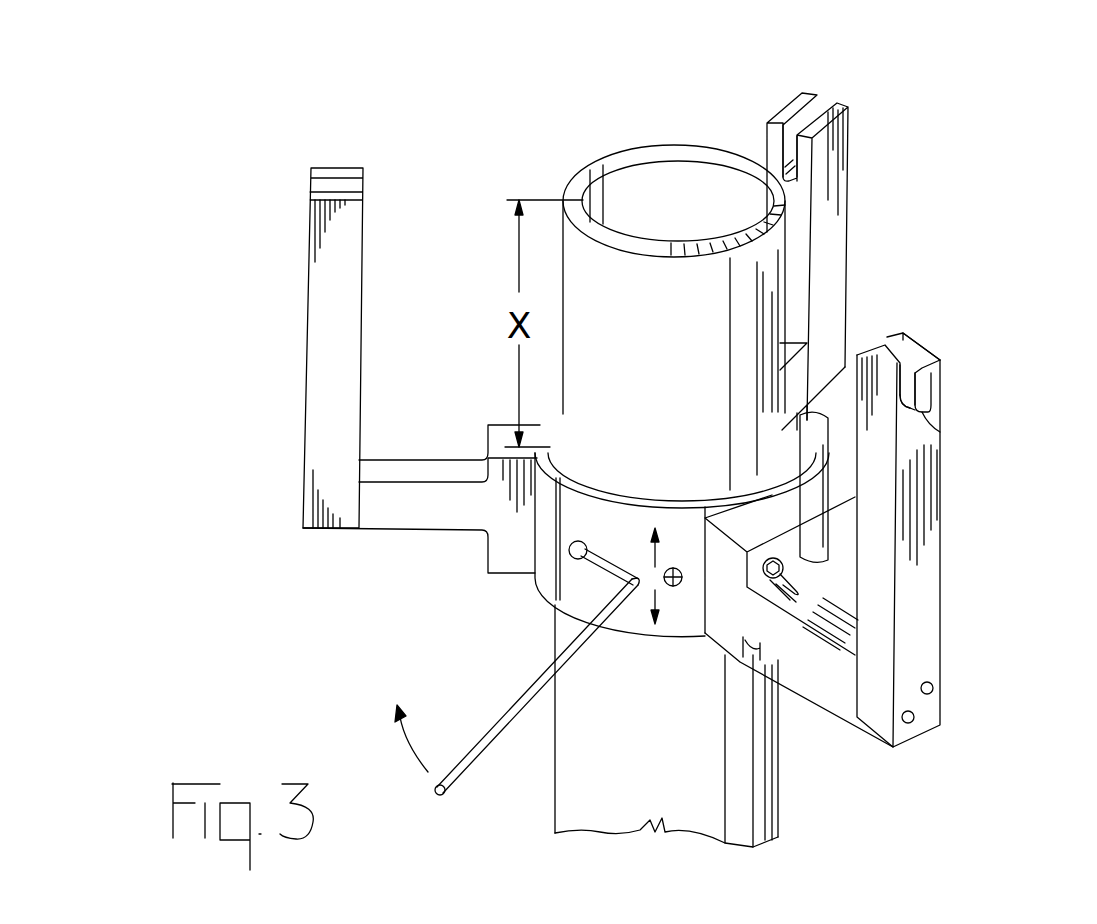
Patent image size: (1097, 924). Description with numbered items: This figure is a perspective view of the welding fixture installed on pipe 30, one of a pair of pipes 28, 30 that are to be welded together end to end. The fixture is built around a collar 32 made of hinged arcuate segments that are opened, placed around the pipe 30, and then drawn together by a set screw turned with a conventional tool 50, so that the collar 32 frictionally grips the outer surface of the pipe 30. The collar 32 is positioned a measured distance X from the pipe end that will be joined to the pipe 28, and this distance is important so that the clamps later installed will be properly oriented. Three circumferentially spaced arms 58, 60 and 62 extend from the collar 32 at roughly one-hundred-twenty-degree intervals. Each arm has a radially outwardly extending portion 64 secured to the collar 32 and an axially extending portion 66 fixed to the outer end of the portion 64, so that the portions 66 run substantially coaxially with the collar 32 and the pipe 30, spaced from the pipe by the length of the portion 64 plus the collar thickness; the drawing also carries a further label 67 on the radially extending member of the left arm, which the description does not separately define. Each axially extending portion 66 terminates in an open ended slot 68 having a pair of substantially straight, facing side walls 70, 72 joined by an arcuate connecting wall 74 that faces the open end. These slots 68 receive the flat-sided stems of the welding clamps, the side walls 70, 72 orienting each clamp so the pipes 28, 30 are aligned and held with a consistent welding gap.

The pipe 28 is at (642, 282).
The pipe 30 is at (733, 773).
The collar 32 is at (623, 532).
The tool 50 is at (497, 737).
The arm 58 is at (881, 629).
The arm 60 is at (364, 545).
The arm 62 is at (860, 235).
The radially outwardly extending portion 64 is at (818, 665).
The axially extending portion 66 is at (330, 355).
The arm 67 is at (421, 513).
The slot 68 is at (790, 125).
The side wall 70 is at (927, 362).
The side wall 72 is at (905, 378).
The arcuate connecting wall 74 is at (925, 418).